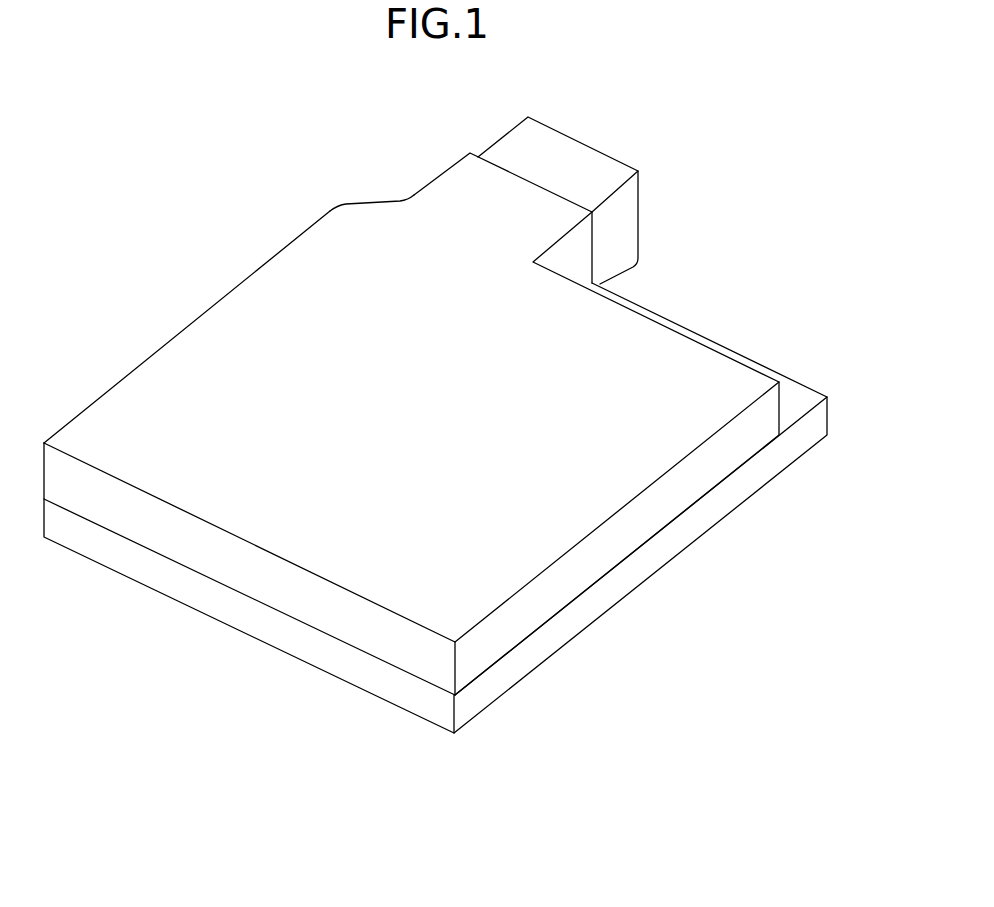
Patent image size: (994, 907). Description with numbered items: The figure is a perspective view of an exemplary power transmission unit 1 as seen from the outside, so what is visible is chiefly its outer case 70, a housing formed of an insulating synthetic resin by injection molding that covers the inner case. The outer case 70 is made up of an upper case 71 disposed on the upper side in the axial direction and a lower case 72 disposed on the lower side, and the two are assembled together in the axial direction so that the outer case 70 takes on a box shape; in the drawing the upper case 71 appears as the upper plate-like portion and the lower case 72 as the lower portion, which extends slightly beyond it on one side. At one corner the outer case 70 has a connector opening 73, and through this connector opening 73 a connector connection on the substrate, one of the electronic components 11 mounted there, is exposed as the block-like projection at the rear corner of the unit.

The power transmission unit 1 is at (248, 236).
The electronic components 11 is at (585, 158).
The outer case 70 is at (685, 701).
The upper case 71 is at (597, 558).
The lower case 72 is at (643, 573).
The connector opening 73 is at (472, 178).